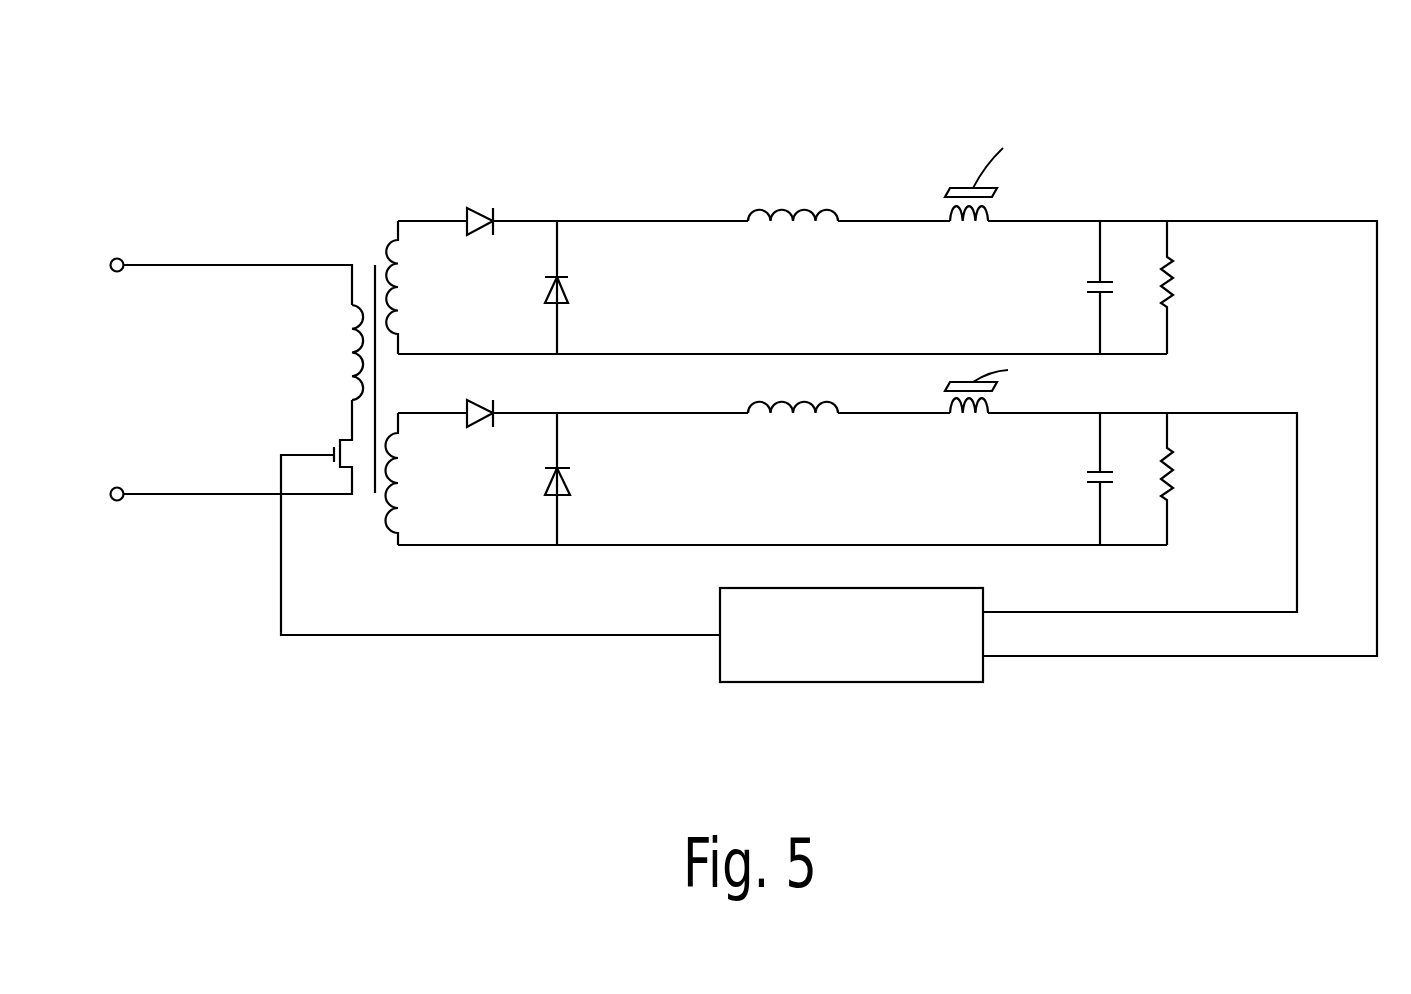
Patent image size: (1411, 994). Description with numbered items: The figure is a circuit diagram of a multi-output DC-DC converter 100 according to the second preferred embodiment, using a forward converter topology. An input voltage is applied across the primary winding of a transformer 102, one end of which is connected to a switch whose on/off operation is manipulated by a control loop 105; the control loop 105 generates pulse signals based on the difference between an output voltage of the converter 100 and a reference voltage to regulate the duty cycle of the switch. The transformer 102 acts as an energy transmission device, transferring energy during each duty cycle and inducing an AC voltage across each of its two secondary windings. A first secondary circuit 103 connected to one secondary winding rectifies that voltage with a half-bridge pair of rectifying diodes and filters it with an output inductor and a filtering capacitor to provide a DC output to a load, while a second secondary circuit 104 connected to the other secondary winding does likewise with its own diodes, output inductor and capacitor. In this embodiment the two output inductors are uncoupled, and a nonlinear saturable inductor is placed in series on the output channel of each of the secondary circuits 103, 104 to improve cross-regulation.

The multi-output DC-DC converter 100 is at (1390, 95).
The transformer 102 is at (376, 233).
The first secondary circuit 103 is at (544, 213).
The second secondary circuit 104 is at (545, 405).
The control loop 105 is at (733, 603).